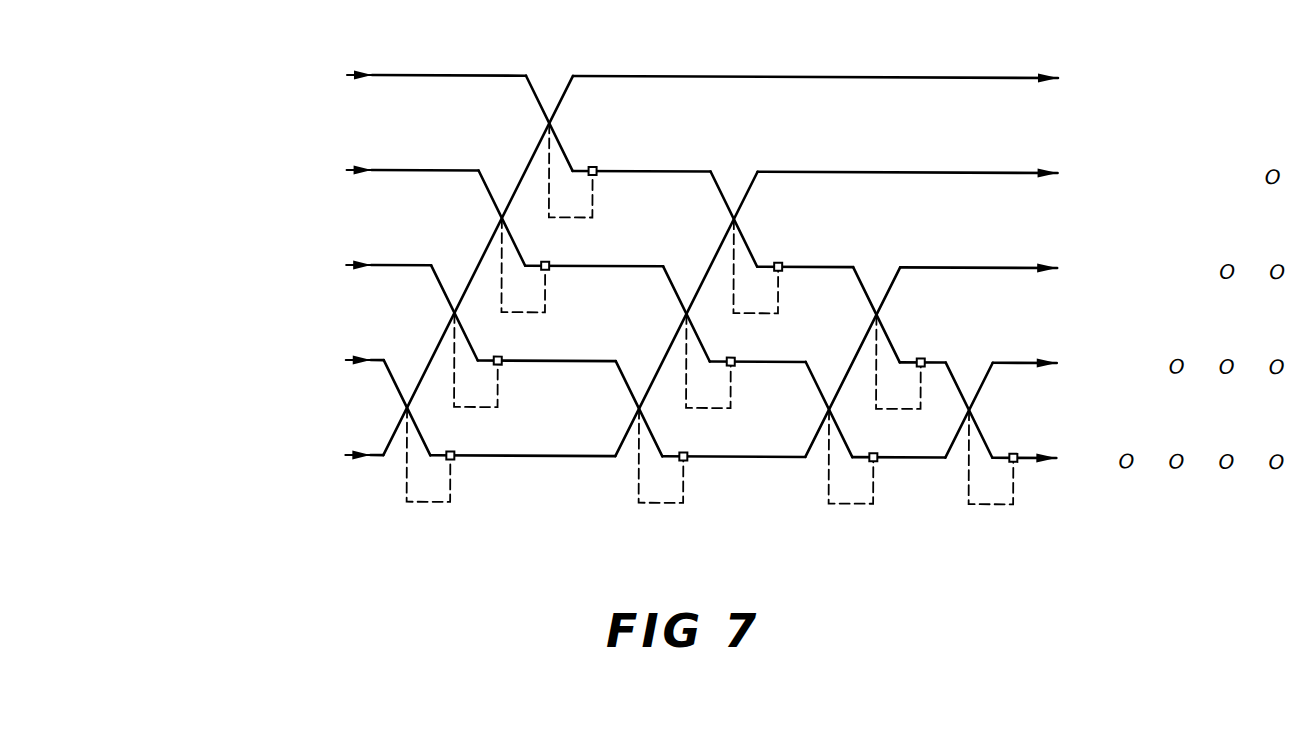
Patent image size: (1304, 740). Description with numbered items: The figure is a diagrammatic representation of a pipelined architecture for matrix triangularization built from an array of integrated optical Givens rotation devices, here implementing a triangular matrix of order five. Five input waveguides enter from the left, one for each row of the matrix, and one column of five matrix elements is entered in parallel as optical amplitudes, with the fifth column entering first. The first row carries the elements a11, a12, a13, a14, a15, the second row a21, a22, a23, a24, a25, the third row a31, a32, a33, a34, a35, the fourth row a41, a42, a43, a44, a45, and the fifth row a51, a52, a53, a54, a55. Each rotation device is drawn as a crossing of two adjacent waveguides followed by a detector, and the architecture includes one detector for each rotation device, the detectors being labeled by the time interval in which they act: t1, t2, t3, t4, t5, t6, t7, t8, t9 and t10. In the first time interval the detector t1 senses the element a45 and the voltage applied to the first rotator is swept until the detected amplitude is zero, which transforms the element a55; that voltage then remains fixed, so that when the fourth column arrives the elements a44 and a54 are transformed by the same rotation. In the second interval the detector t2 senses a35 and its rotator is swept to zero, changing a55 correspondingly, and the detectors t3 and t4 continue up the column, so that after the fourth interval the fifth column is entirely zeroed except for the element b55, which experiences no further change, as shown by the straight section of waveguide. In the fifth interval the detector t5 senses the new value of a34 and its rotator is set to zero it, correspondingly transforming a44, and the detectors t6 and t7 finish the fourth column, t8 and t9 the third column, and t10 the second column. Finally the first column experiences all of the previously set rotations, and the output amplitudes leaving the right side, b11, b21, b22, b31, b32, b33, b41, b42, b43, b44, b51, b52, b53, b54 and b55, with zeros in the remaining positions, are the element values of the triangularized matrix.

The first time interval detector t1 is at (432, 431).
The second time interval detector t2 is at (480, 336).
The third time interval detector t3 is at (527, 242).
The fourth time interval detector t4 is at (574, 147).
The fifth time interval detector t5 is at (665, 432).
The sixth time interval detector t6 is at (713, 337).
The seventh time interval detector t7 is at (760, 243).
The eighth time interval detector t8 is at (855, 433).
The ninth time interval detector t9 is at (903, 338).
The tenth time interval detector t10 is at (998, 434).
The input matrix element a11 is at (130, 80).
The input matrix element a12 is at (179, 80).
The input matrix element a13 is at (228, 80).
The input matrix element a14 is at (277, 81).
The input matrix element a15 is at (326, 81).
The input matrix element a21 is at (129, 175).
The input matrix element a22 is at (178, 175).
The input matrix element a23 is at (227, 175).
The input matrix element a24 is at (276, 176).
The input matrix element a25 is at (325, 176).
The input matrix element a31 is at (129, 270).
The input matrix element a32 is at (178, 270).
The input matrix element a33 is at (227, 270).
The input matrix element a34 is at (276, 271).
The input matrix element a35 is at (325, 271).
The input matrix element a41 is at (129, 365).
The input matrix element a42 is at (178, 365).
The input matrix element a43 is at (227, 365).
The input matrix element a44 is at (276, 366).
The input matrix element a45 is at (325, 366).
The input matrix element a51 is at (128, 460).
The input matrix element a52 is at (177, 460).
The input matrix element a53 is at (226, 460).
The input matrix element a54 is at (275, 461).
The input matrix element a55 is at (324, 461).
The output matrix element b11 is at (1079, 464).
The output matrix element b21 is at (1080, 369).
The output matrix element b22 is at (1130, 369).
The output matrix element b31 is at (1080, 274).
The output matrix element b32 is at (1130, 274).
The output matrix element b33 is at (1180, 274).
The output matrix element b41 is at (1080, 179).
The output matrix element b42 is at (1130, 179).
The output matrix element b43 is at (1180, 179).
The output matrix element b44 is at (1230, 180).
The output matrix element b51 is at (1081, 84).
The output matrix element b52 is at (1131, 84).
The output matrix element b53 is at (1181, 84).
The output matrix element b54 is at (1231, 85).
The output matrix element b55 is at (1281, 85).